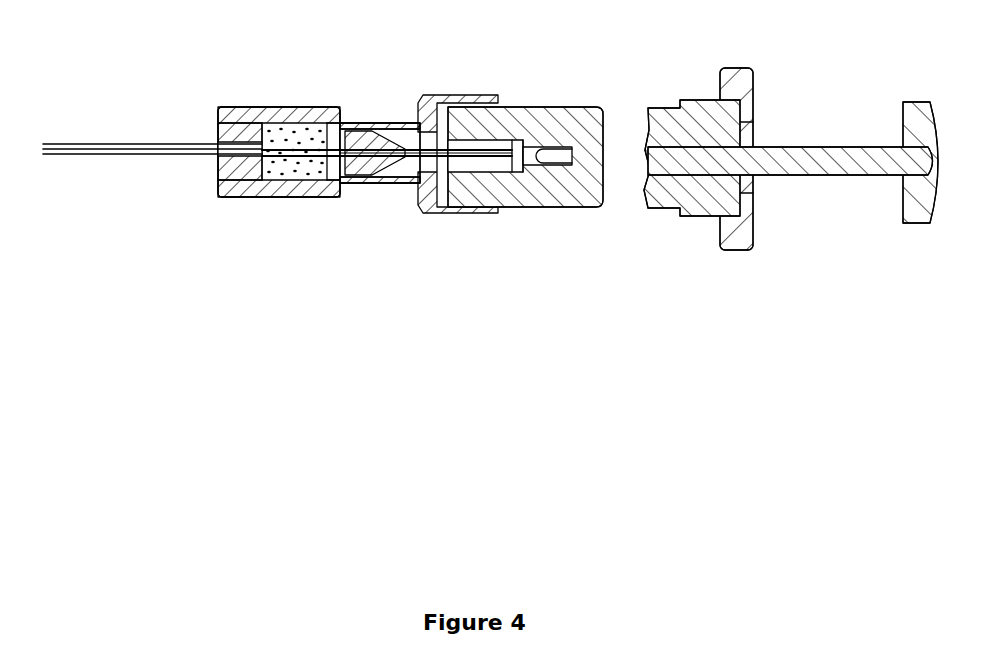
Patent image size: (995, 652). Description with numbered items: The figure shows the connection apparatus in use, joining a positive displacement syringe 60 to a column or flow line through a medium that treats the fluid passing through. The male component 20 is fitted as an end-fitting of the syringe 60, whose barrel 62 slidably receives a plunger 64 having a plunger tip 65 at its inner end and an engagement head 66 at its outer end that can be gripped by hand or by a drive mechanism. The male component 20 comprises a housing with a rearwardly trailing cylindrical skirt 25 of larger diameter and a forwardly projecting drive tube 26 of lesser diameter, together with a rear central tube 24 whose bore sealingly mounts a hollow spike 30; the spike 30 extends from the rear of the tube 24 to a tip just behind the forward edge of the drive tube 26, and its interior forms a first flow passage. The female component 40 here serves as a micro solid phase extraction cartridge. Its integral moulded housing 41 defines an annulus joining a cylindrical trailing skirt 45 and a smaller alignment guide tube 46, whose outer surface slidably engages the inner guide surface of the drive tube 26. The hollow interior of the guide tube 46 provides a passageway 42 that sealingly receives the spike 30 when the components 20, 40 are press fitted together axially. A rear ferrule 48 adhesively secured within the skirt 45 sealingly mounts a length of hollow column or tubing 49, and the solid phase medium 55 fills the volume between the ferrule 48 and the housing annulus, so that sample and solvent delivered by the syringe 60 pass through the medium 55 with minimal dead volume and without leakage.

The male component 20 is at (432, 151).
The rear central tube 24 is at (497, 165).
The cylindrical skirt 25 is at (483, 96).
The drive tube 26 is at (374, 184).
The hollow spike 30 is at (475, 160).
The female component 40 is at (319, 161).
The housing 41 is at (291, 178).
The passageway 42 is at (333, 186).
The trailing skirt 45 is at (278, 107).
The alignment guide tube 46 is at (372, 131).
The rear ferrule 48 is at (241, 176).
The hollow column or tubing 49 is at (168, 143).
The solid phase medium 55 is at (300, 176).
The positive displacement syringe 60 is at (738, 172).
The barrel 62 is at (573, 124).
The plunger 64 is at (797, 165).
The plunger tip 65 is at (519, 173).
The engagement head 66 is at (925, 224).